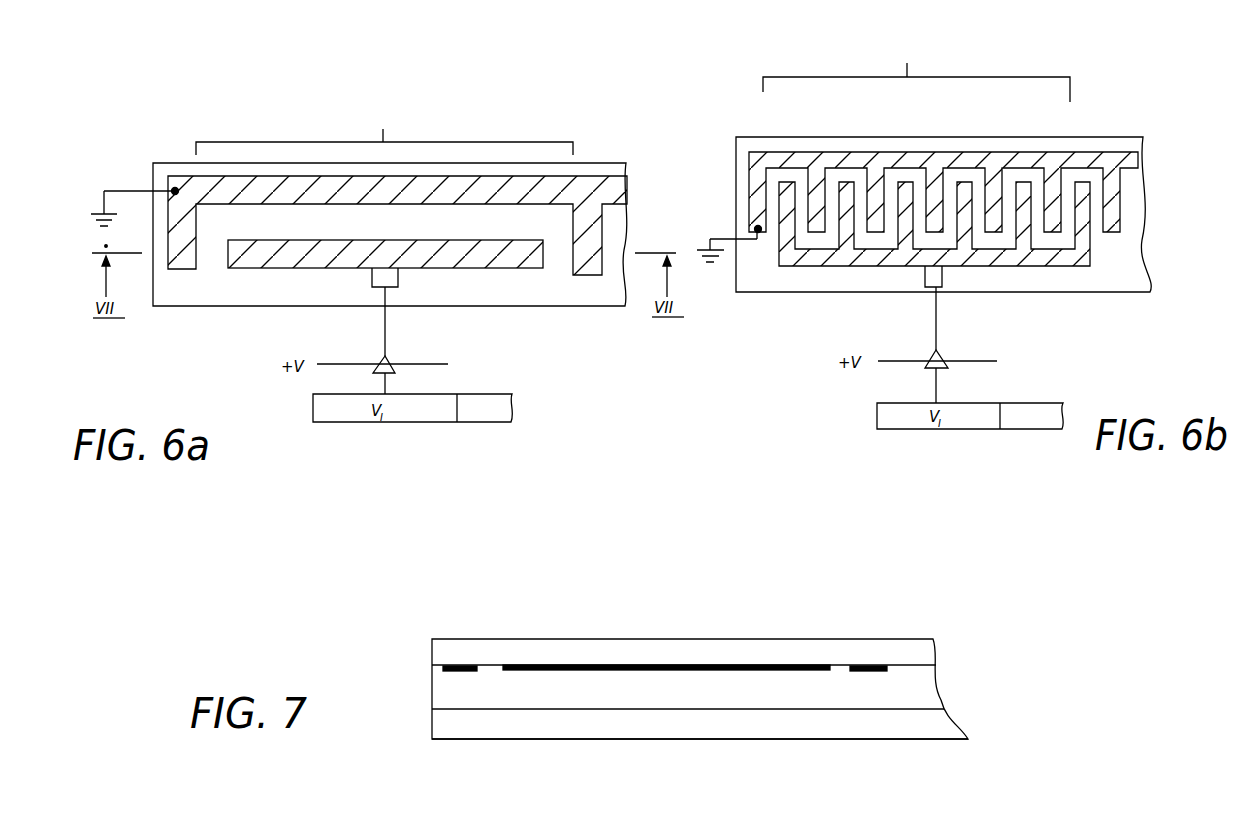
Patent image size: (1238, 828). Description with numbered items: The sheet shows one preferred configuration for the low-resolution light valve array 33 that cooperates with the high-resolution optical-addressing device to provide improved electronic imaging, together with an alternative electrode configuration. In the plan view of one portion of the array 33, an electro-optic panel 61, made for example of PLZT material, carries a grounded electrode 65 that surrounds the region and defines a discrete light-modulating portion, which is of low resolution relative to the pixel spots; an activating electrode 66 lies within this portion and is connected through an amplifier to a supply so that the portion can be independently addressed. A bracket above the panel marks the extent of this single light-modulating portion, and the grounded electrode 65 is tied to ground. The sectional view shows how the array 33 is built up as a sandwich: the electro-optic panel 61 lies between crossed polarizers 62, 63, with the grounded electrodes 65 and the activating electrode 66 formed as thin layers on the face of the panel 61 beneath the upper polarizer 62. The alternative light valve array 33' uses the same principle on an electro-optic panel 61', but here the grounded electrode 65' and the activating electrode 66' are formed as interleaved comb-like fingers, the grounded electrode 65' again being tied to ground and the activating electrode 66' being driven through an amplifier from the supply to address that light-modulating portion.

In FIG. 6a, the light valve array 33 is at (384, 129).
In FIG. 7, the light valve array 33 is at (700, 662).
In FIG. 6a, the electro-optic panel 61 is at (390, 249).
In FIG. 7, the electro-optic panel 61 is at (711, 690).
In FIG. 7, the polarizer 62 is at (927, 652).
In FIG. 7, the polarizer 63 is at (948, 730).
In FIG. 6a, the grounded electrode 65 is at (397, 225).
In FIG. 7, the grounded electrode 65 is at (665, 685).
In FIG. 6a, the activating electrode 66 is at (385, 285).
In FIG. 7, the activating electrode 66 is at (666, 685).
In FIG. 6b, the alternative light valve array 33' is at (916, 66).
In FIG. 6b, the electro-optic panel 61' is at (943, 236).
In FIG. 6b, the grounded electrode 65' is at (943, 162).
In FIG. 6b, the activating electrode 66' is at (934, 266).